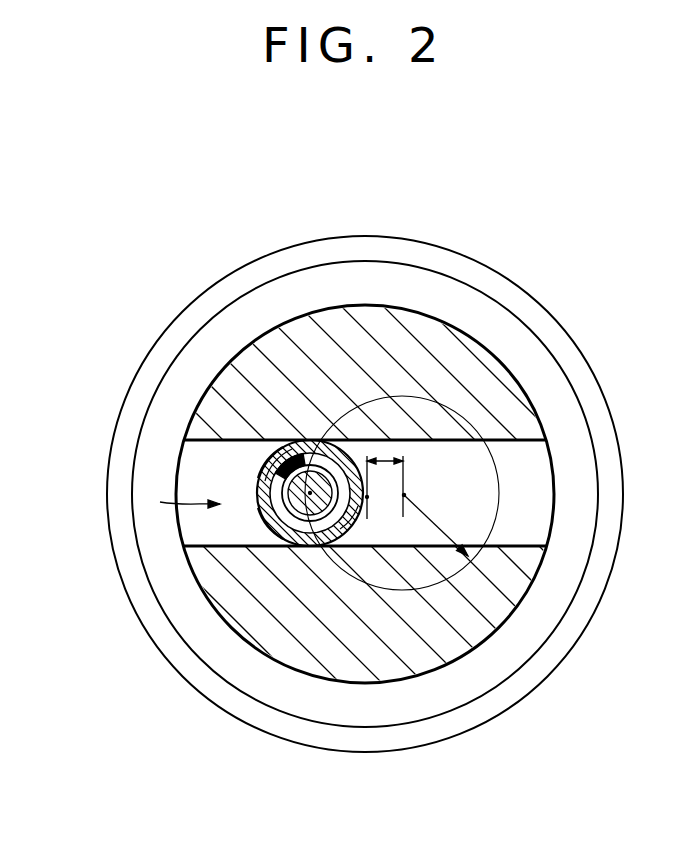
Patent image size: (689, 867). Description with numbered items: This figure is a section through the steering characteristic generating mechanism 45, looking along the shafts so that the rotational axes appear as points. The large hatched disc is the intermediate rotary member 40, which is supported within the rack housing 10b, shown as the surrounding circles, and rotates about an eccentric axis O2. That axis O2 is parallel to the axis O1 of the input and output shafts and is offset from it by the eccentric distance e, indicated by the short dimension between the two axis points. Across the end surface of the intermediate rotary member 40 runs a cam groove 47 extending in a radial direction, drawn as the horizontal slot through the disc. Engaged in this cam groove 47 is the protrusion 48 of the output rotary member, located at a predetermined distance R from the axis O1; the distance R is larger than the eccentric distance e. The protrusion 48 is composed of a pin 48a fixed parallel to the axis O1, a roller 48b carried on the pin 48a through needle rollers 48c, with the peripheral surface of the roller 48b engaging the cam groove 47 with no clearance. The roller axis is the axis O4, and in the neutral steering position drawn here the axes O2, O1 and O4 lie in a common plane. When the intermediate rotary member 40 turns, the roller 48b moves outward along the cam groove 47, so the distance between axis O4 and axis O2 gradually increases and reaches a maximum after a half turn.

The rack housing 10b is at (420, 237).
The intermediate rotary member 40 is at (336, 315).
The steering characteristic generating mechanism 45 is at (160, 502).
The cam groove 47 is at (513, 442).
The protrusion 48 is at (277, 542).
The pin 48a is at (262, 518).
The roller 48b is at (262, 470).
The needle rollers 48c is at (268, 446).
The axis O1 is at (405, 494).
The eccentric axis O2 is at (367, 497).
The axis O4 is at (310, 493).
The eccentric distance e is at (385, 487).
The predetermined distance R is at (436, 525).